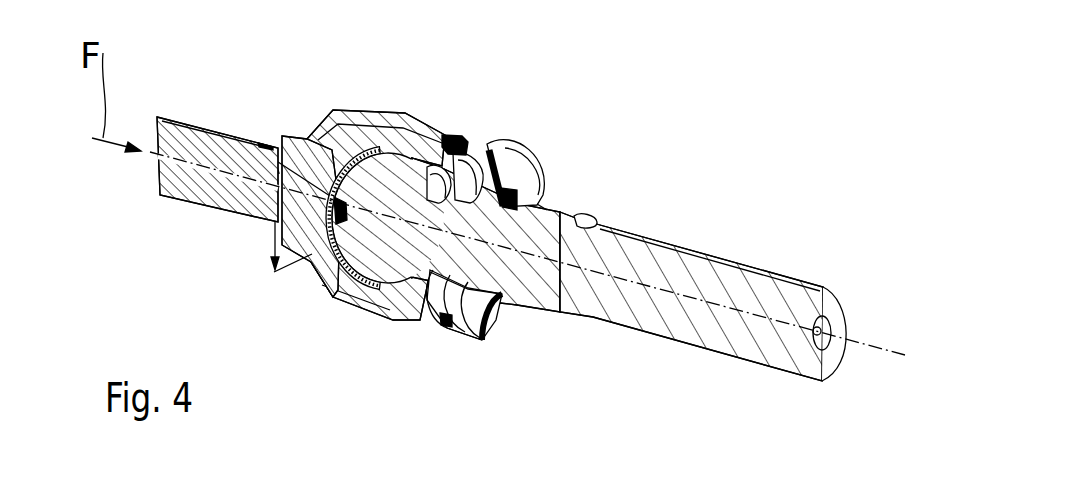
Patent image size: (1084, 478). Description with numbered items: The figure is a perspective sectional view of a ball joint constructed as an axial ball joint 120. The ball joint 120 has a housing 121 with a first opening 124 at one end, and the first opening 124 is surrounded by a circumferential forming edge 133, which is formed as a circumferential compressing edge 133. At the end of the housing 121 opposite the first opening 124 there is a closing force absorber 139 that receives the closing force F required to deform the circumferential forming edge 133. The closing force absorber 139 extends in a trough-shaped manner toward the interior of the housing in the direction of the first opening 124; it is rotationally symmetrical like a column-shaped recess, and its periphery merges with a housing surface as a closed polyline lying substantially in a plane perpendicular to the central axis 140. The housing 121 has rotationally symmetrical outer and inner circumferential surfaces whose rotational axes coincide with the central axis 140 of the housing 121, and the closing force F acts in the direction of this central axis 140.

The axial ball joint 120 is at (567, 153).
The housing 121 is at (442, 118).
The first opening 124 is at (266, 244).
The circumferential forming edge 133 is at (312, 140).
The closing force absorber 139 is at (467, 293).
The central axis 140 is at (860, 345).